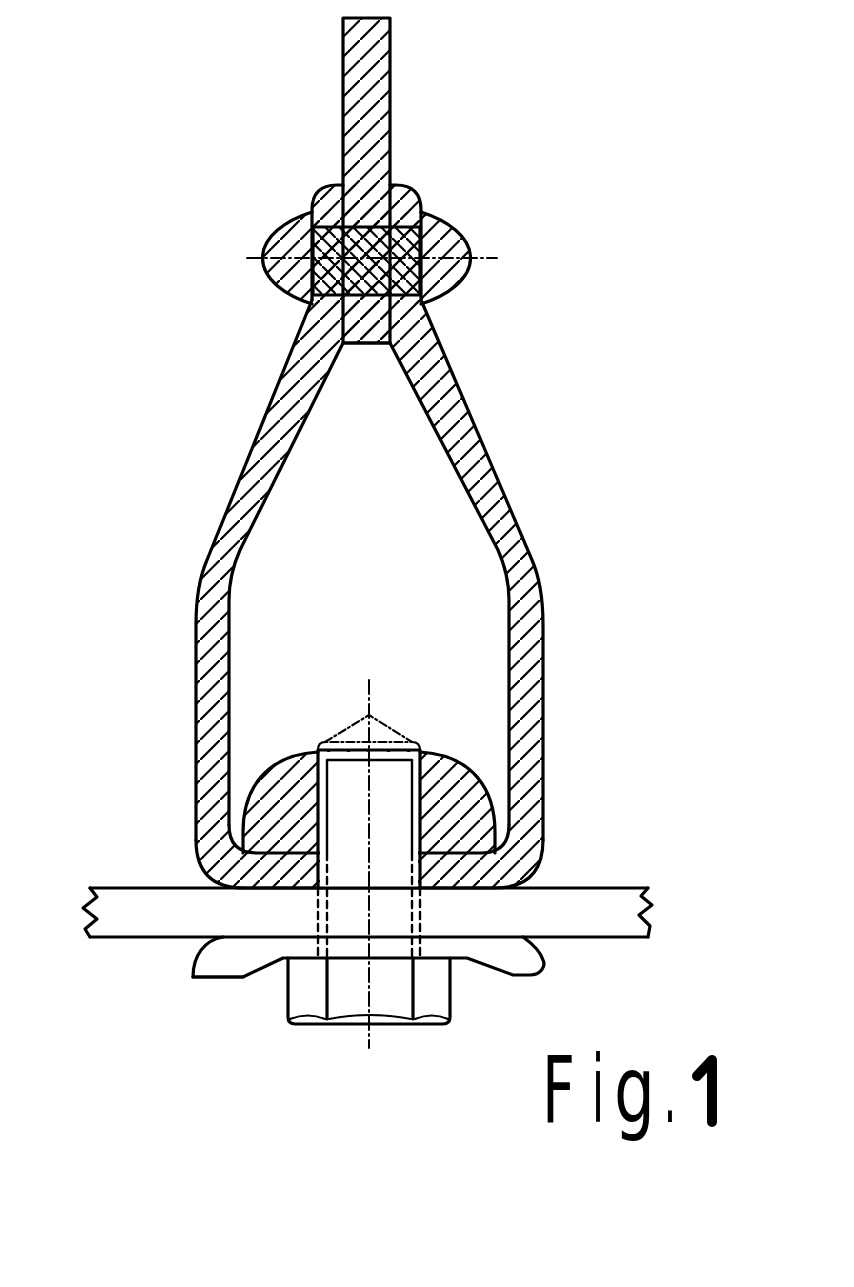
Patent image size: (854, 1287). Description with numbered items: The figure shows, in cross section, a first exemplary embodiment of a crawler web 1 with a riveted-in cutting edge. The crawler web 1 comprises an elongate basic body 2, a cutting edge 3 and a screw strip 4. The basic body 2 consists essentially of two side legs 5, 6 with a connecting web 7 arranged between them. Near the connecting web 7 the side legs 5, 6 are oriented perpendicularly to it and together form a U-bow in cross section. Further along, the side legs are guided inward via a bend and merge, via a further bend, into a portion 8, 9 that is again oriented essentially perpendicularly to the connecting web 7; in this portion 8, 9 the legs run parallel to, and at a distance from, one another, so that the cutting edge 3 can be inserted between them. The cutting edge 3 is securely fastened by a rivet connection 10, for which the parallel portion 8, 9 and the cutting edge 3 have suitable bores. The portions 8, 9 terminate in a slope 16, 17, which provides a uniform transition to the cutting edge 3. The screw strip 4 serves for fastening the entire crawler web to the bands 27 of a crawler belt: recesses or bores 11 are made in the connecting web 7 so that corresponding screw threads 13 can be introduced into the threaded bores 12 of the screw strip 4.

The crawler web 1 is at (398, 453).
The basic body 2 is at (332, 482).
The cutting edge 3 is at (373, 72).
The screw strip 4 is at (467, 820).
The side leg 5 is at (482, 467).
The side leg 6 is at (263, 465).
The connecting web 7 is at (230, 888).
The portion of side leg 8 is at (422, 186).
The portion of side leg 9 is at (310, 188).
The rivet connection 10 is at (400, 258).
The recesses or bores 11 is at (250, 878).
The threaded bores 12 is at (368, 848).
The screw threads 13 is at (357, 727).
The slope 16 is at (400, 180).
The slope 17 is at (332, 173).
The bands of a crawler belt 27 is at (582, 900).